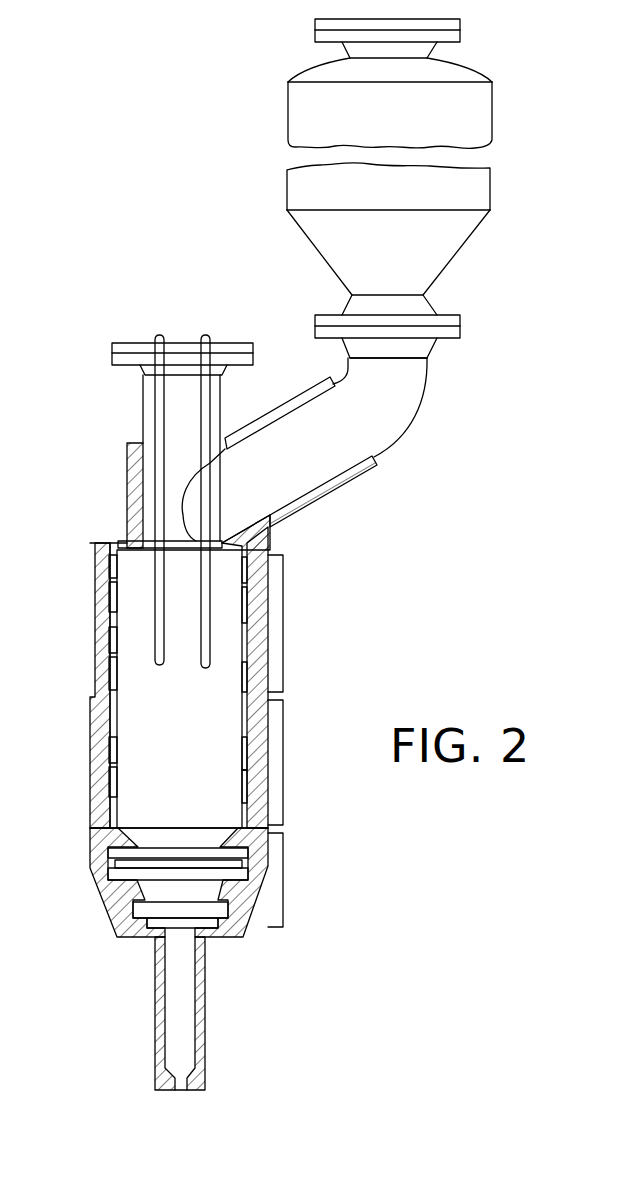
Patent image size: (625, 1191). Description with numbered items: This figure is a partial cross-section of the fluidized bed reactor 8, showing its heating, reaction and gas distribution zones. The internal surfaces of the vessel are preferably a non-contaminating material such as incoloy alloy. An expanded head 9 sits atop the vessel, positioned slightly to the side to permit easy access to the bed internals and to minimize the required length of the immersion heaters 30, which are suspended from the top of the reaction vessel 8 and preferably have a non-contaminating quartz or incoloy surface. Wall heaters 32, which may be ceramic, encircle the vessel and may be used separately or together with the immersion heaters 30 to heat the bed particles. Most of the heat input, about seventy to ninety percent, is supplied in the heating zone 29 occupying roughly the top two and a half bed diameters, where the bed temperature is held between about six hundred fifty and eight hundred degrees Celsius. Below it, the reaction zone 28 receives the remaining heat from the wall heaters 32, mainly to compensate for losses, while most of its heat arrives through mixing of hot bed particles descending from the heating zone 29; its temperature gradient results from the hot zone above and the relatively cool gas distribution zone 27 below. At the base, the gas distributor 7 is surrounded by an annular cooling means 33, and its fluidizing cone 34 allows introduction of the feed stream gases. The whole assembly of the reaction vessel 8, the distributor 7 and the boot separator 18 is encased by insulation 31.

The gas distributor 7 is at (260, 937).
The fluidized bed reactor 8 is at (282, 541).
The expanded head 9 is at (298, 118).
The boot separator 18 is at (158, 1048).
The gas distribution zone 27 is at (283, 875).
The reaction zone 28 is at (283, 768).
The heating zone 29 is at (283, 620).
The immersion heaters 30 is at (202, 340).
The insulation 31 is at (127, 488).
The wall heaters 32 is at (90, 593).
The annular cooling means 33 is at (117, 864).
The fluidizing cone 34 is at (137, 885).